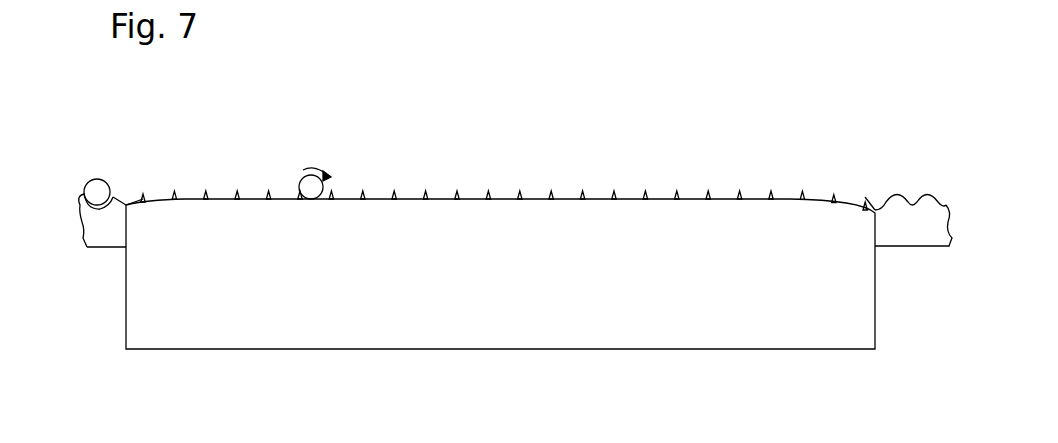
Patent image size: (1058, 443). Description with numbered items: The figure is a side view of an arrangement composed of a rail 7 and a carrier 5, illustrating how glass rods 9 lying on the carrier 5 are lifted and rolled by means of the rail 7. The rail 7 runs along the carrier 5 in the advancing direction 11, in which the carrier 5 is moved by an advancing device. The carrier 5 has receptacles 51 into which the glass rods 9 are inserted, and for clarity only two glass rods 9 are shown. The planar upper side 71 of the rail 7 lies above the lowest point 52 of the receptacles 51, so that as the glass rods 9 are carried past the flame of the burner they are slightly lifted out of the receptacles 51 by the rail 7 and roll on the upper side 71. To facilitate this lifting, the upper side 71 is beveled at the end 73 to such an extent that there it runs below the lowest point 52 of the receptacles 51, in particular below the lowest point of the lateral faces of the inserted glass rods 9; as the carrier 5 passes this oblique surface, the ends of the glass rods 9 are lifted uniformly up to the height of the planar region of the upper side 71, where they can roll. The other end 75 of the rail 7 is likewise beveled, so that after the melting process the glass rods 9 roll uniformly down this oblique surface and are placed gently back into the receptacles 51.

The rail 7 is at (273, 291).
The upper side of the rail 71 is at (355, 199).
The beveled end of the rail 73 is at (143, 199).
The lowest point of the receptacles 52 is at (125, 205).
The glass rods 9 is at (84, 182).
The advancing direction 11 is at (84, 252).
The other beveled end of the rail 75 is at (865, 200).
The receptacles 51 is at (887, 197).
The carrier 5 is at (915, 228).